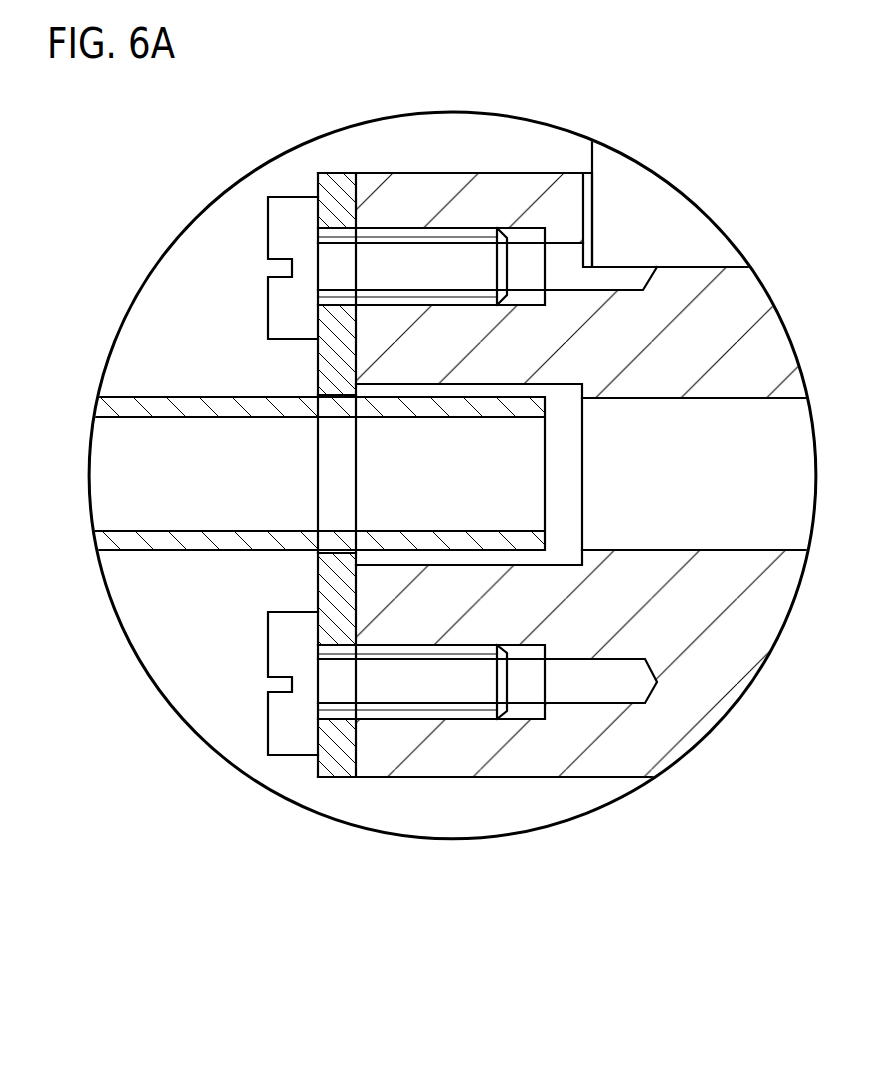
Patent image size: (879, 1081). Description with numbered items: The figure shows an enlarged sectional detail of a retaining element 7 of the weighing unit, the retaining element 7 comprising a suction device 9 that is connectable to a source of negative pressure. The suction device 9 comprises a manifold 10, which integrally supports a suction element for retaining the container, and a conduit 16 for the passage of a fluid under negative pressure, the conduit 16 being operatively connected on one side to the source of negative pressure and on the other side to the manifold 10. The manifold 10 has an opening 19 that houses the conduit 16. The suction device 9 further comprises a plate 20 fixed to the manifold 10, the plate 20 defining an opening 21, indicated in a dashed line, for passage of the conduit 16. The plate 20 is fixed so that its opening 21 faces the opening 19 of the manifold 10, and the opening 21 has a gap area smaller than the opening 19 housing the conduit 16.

The retaining element 7 is at (467, 507).
The suction device 9 is at (383, 556).
The manifold 10 is at (532, 784).
The conduit 16 is at (206, 557).
The opening 19 is at (575, 484).
The plate 20 is at (302, 364).
The opening 21 is at (308, 470).